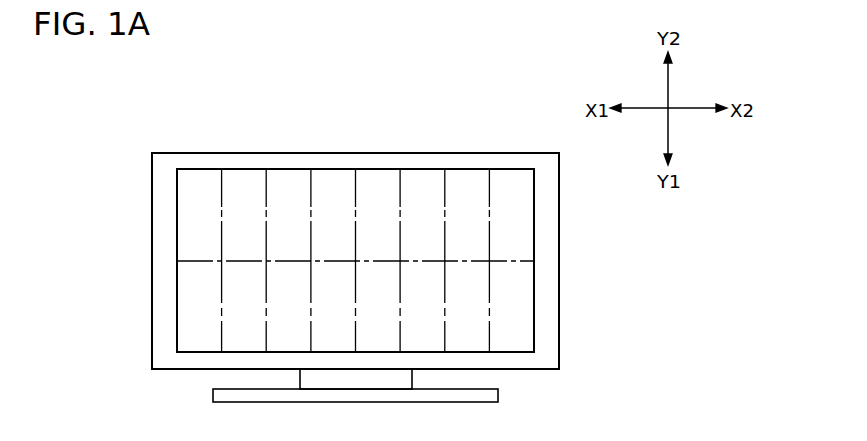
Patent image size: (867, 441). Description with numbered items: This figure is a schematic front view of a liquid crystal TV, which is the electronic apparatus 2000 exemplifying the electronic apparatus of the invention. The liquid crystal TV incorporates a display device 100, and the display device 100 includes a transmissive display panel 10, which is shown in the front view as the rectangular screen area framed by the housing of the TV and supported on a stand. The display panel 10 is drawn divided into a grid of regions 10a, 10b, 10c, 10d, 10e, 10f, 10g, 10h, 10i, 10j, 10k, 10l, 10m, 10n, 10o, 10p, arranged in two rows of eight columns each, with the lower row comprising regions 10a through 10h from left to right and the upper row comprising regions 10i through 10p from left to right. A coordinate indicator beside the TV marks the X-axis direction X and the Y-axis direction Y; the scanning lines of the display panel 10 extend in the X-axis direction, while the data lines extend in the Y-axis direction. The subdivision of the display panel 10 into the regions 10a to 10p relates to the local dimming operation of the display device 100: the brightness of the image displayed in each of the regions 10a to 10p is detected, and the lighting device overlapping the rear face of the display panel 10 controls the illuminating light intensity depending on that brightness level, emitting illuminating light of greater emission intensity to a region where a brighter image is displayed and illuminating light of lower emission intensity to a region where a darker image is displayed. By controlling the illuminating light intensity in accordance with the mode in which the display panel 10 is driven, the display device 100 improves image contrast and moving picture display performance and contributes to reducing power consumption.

The electronic apparatus 2000 is at (126, 70).
The display panel 10 is at (527, 239).
The display device 100 is at (467, 160).
The region 10a is at (197, 338).
The region 10b is at (243, 338).
The region 10c is at (290, 338).
The region 10d is at (336, 338).
The region 10e is at (383, 338).
The region 10f is at (430, 338).
The region 10g is at (476, 338).
The region 10h is at (523, 338).
The region 10i is at (193, 180).
The region 10j is at (240, 180).
The region 10k is at (286, 180).
The region 10l is at (332, 180).
The region 10m is at (379, 180).
The region 10n is at (426, 180).
The region 10o is at (458, 178).
The region 10p is at (510, 178).
The X-axis direction X is at (686, 110).
The Y-axis direction Y is at (670, 88).